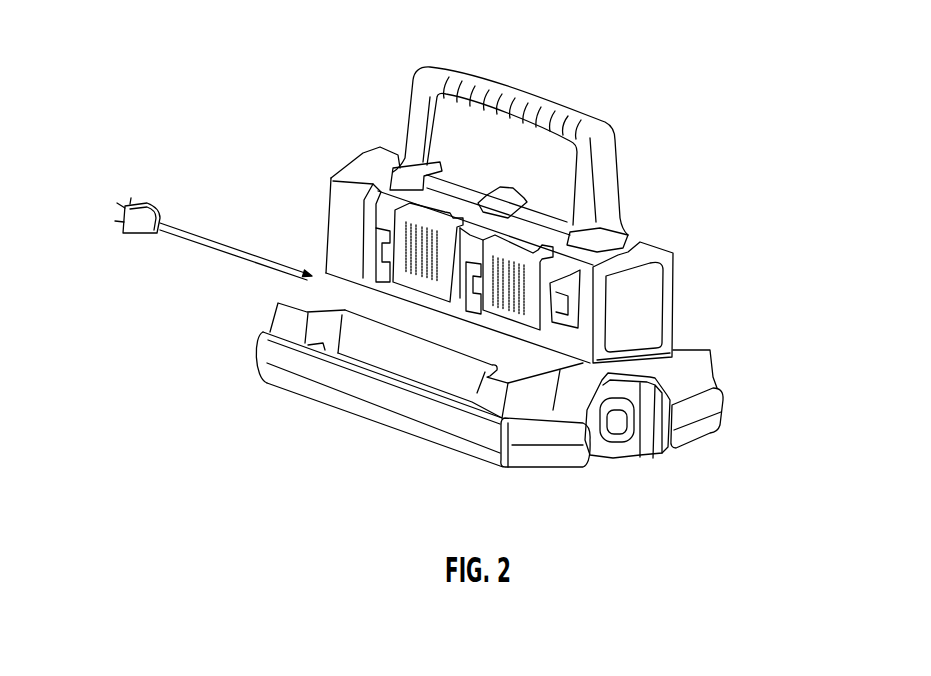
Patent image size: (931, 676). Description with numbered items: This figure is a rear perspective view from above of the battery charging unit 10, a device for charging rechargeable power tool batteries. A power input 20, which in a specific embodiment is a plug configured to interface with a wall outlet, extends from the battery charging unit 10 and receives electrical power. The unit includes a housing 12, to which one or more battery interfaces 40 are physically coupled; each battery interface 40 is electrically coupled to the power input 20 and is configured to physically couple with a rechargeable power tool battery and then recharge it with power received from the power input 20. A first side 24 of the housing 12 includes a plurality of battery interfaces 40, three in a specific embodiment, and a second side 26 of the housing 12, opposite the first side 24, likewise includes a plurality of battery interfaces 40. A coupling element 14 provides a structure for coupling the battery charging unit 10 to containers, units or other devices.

The battery charging unit 10 is at (284, 129).
The housing 12 is at (700, 345).
The coupling element 14 is at (657, 453).
The power input 20 is at (210, 253).
The first side 24 is at (350, 252).
The second side 26 is at (679, 246).
The battery interface 40 is at (537, 332).